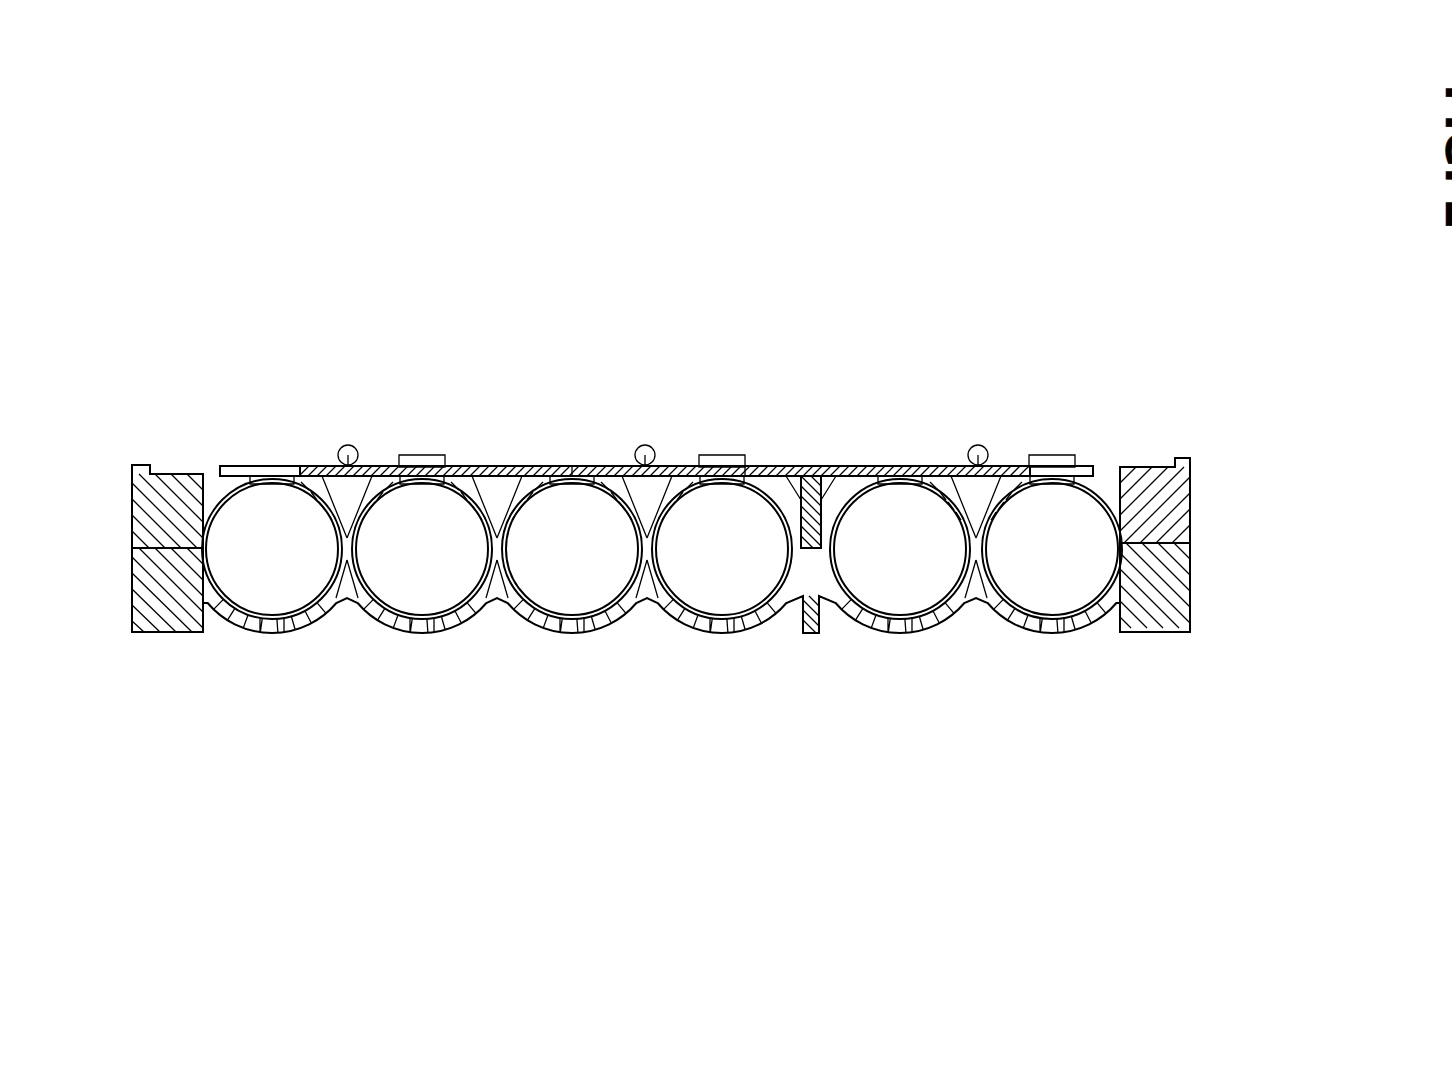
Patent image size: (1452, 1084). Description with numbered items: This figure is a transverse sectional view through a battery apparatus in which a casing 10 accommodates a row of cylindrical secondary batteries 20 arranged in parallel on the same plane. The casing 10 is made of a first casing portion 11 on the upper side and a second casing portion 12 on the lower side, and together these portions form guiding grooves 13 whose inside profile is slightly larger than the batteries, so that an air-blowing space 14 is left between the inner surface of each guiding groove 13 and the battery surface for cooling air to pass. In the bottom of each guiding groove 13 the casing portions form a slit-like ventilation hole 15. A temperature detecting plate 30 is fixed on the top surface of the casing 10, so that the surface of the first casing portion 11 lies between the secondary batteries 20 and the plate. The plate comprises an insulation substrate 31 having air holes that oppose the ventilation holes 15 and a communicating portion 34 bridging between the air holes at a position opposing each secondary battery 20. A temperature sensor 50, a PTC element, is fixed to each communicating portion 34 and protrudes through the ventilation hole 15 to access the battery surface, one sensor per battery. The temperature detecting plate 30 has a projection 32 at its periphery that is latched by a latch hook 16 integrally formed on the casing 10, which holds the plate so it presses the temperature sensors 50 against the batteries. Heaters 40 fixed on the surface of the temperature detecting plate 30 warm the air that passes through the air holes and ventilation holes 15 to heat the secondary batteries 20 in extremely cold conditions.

The casing 10 is at (733, 554).
The first casing portion 11 is at (1175, 506).
The second casing portion 12 is at (1175, 588).
The guiding groove 13 is at (200, 503).
The air-blowing space 14 is at (948, 610).
The ventilation hole 15 is at (463, 466).
The latch hook 16 is at (415, 455).
The secondary battery 20 is at (273, 600).
The temperature detecting plate 30 is at (697, 371).
The insulation substrate 31 is at (838, 468).
The projection 32 is at (228, 466).
The communicating portion 34 is at (742, 468).
The heater 40 is at (348, 445).
The temperature sensor 50 is at (270, 478).